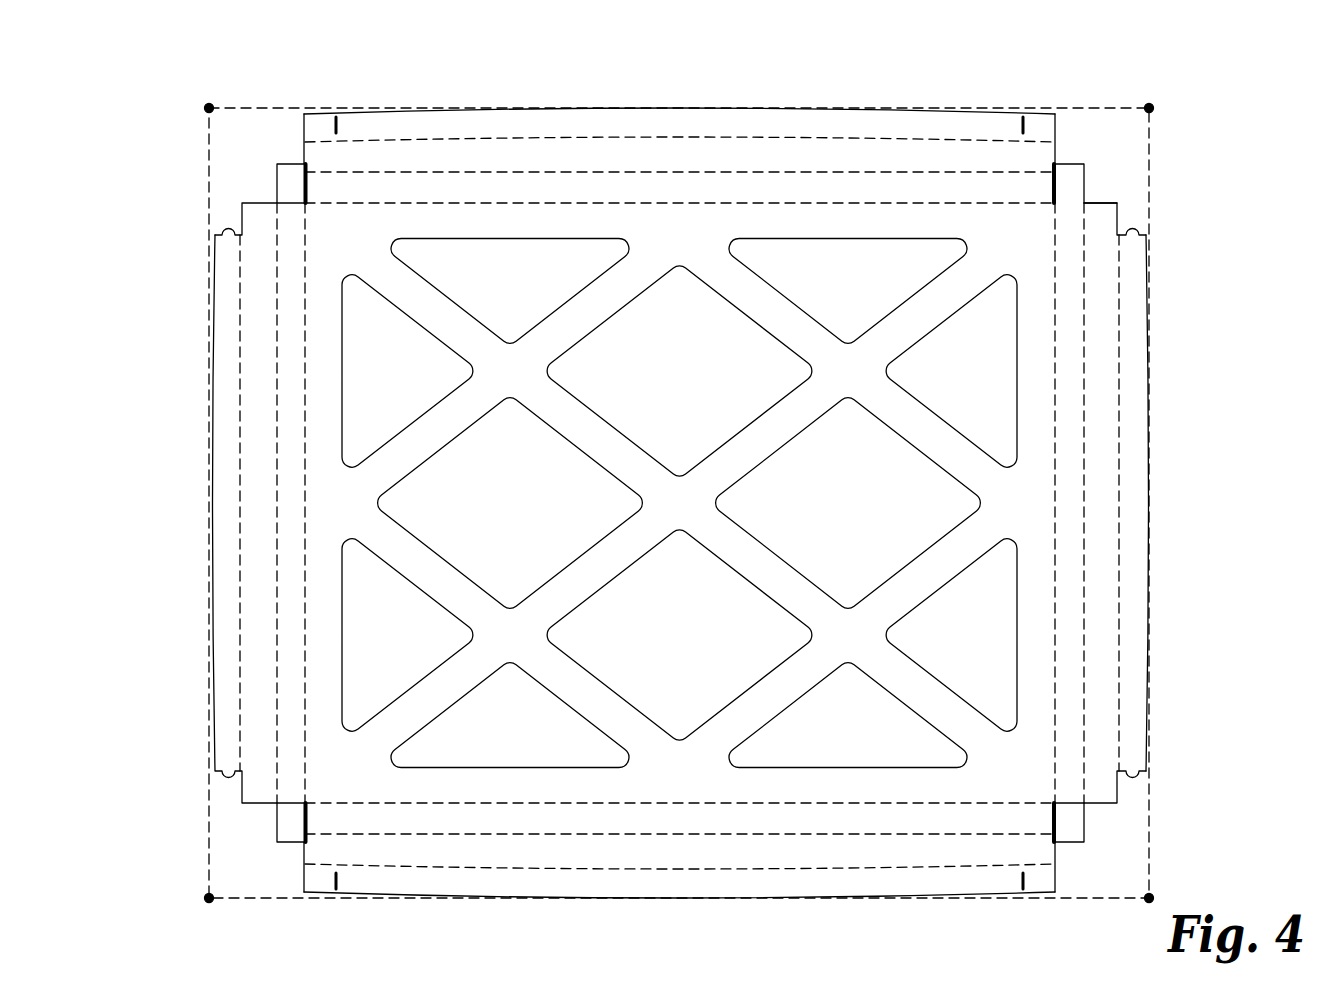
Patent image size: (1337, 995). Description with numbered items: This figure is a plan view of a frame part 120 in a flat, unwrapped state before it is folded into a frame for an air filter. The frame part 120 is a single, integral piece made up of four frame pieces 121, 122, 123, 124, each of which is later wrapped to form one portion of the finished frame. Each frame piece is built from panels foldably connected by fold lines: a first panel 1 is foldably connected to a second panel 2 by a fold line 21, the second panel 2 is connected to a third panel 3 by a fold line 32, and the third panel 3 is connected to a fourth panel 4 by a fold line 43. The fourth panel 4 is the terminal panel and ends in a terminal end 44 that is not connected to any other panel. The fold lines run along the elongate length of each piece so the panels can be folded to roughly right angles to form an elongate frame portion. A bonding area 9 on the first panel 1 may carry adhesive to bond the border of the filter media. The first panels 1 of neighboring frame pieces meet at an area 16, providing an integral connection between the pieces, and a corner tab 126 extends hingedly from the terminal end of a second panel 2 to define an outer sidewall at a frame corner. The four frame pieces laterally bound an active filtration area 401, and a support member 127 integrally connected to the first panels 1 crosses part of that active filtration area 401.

The first panel 1 is at (472, 218).
The second panel 2 is at (536, 185).
The third panel 3 is at (590, 153).
The fourth panel 4 is at (643, 122).
The bonding area 9 is at (862, 227).
The area 16 is at (1040, 217).
The fold line 21 is at (947, 200).
The fold line 32 is at (886, 170).
The fold line 43 is at (833, 135).
The terminal end 44 is at (776, 110).
The frame part 120 is at (1203, 80).
The frame piece 121 is at (390, 76).
The frame piece 122 is at (1197, 440).
The frame piece 123 is at (575, 913).
The frame piece 124 is at (160, 440).
The corner tab 126 is at (290, 186).
The support member 127 is at (778, 567).
The active filtration area 401 is at (483, 515).